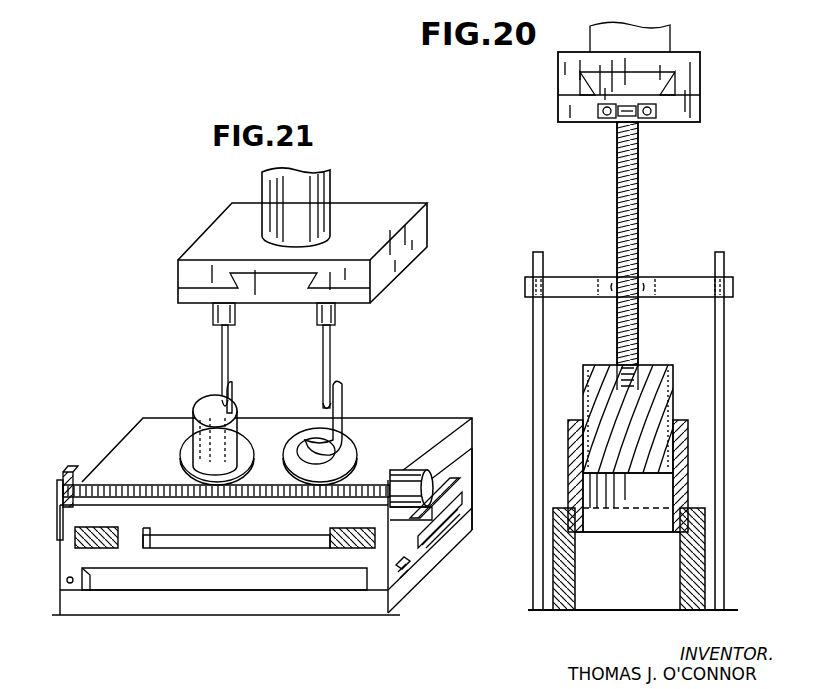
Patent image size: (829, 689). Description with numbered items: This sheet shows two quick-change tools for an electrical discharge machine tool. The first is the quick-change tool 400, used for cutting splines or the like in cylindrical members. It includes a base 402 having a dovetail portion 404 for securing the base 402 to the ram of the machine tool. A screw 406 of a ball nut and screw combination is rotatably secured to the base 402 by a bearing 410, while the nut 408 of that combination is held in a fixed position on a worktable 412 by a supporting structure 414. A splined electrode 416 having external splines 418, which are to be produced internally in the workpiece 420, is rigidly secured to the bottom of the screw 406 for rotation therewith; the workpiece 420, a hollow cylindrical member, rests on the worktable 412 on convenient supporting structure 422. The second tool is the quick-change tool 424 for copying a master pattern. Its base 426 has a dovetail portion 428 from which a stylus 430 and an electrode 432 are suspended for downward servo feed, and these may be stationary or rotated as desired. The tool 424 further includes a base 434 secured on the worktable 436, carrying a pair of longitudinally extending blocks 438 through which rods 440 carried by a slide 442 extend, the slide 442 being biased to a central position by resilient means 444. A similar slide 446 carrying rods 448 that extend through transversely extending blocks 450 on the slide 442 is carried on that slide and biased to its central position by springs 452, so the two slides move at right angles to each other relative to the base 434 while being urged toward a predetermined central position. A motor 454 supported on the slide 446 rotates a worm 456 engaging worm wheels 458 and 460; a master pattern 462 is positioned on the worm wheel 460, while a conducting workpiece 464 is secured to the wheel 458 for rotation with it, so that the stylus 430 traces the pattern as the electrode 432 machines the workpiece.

In FIG. 20, the quick-change tool 400 is at (713, 210).
In FIG. 20, the base 402 is at (560, 72).
In FIG. 20, the dovetail portion 404 is at (590, 78).
In FIG. 20, the screw 406 is at (640, 158).
In FIG. 20, the nut 408 is at (650, 277).
In FIG. 20, the bearing 410 is at (607, 122).
In FIG. 20, the worktable 412 is at (730, 608).
In FIG. 20, the supporting structure 414 is at (724, 352).
In FIG. 20, the splined electrode 416 is at (583, 395).
In FIG. 20, the external splines 418 is at (698, 346).
In FIG. 20, the workpiece 420 is at (685, 457).
In FIG. 20, the supporting structure 422 is at (576, 556).
In FIG. 21, the quick-change tool 424 is at (140, 380).
In FIG. 21, the base 426 is at (190, 288).
In FIG. 21, the dovetail portion 428 is at (305, 282).
In FIG. 21, the stylus 430 is at (336, 320).
In FIG. 21, the electrode 432 is at (213, 320).
In FIG. 21, the base 434 is at (345, 616).
In FIG. 21, the worktable 436 is at (53, 612).
In FIG. 21, the longitudinally extending blocks 438 is at (410, 565).
In FIG. 21, the rods 440 is at (72, 583).
In FIG. 21, the slide 442 is at (125, 570).
In FIG. 21, the resilient means 444 is at (403, 576).
In FIG. 21, the slide 446 is at (60, 522).
In FIG. 21, the rods 448 is at (257, 549).
In FIG. 21, the transversely extending blocks 450 is at (148, 550).
In FIG. 21, the springs 452 is at (90, 540).
In FIG. 21, the motor 454 is at (427, 490).
In FIG. 21, the worm 456 is at (105, 484).
In FIG. 21, the worm wheel 458 is at (185, 456).
In FIG. 21, the worm wheel 460 is at (352, 456).
In FIG. 21, the master pattern 462 is at (342, 410).
In FIG. 21, the conducting workpiece 464 is at (237, 402).